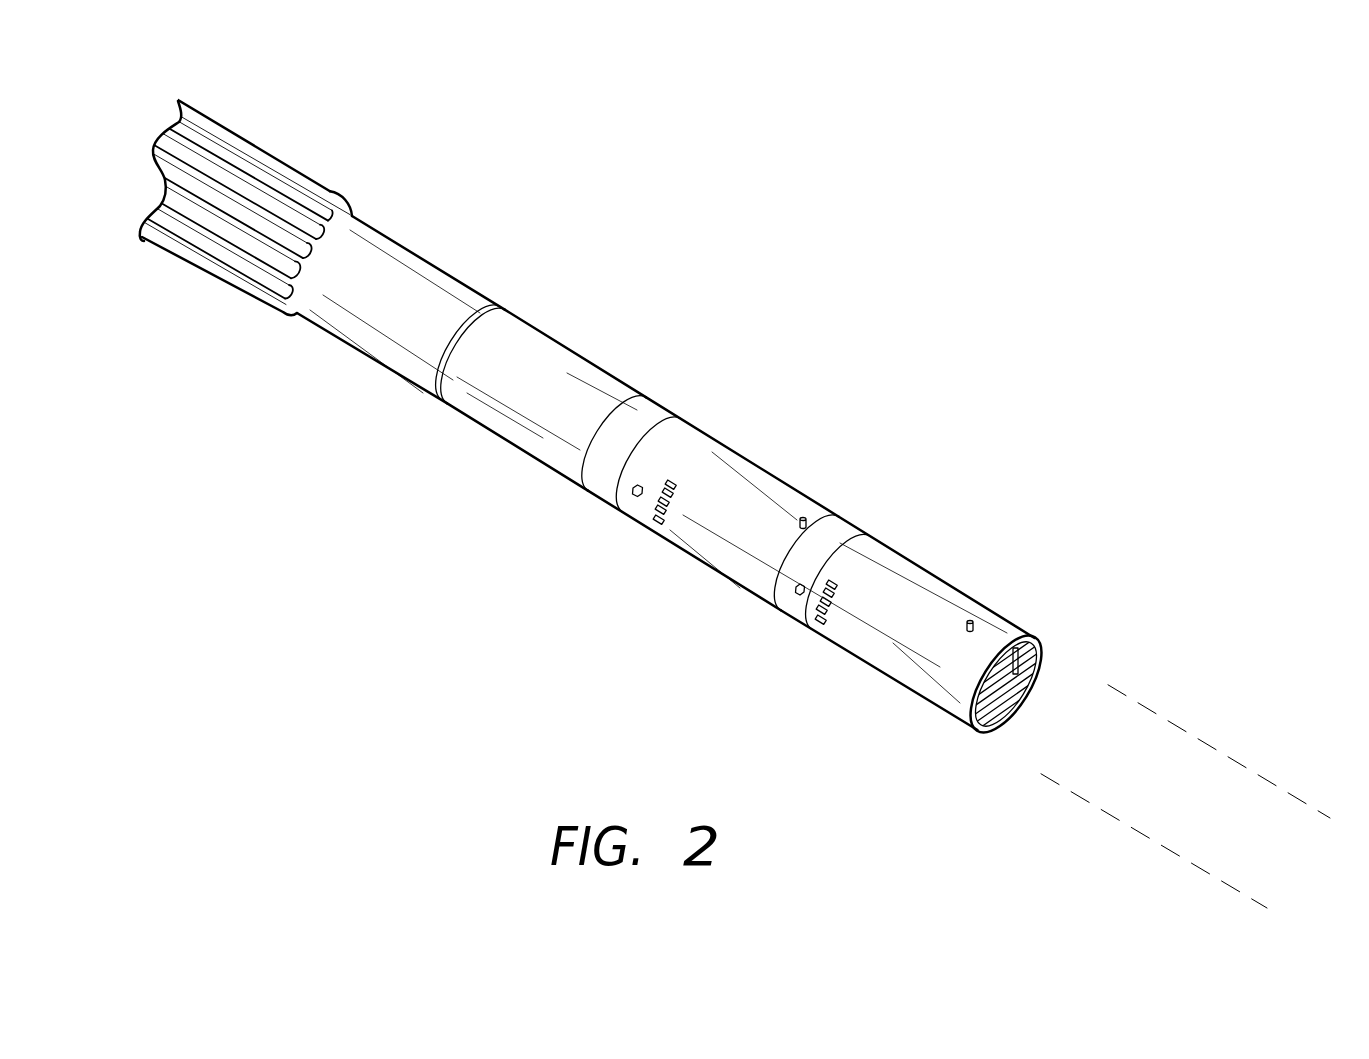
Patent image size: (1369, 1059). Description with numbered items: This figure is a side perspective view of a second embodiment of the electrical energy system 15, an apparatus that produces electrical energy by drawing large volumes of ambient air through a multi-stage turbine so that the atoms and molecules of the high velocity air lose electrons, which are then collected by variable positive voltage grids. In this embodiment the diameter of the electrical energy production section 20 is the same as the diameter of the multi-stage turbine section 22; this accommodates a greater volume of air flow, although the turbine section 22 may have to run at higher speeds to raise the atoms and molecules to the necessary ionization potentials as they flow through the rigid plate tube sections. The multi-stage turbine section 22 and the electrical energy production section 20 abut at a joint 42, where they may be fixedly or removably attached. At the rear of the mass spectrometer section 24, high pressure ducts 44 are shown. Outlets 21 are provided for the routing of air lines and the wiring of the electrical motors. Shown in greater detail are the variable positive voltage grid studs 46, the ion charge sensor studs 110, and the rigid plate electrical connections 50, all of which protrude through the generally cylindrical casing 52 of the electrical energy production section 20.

The electrical energy system 15 is at (962, 238).
The electrical energy production section 20 is at (1040, 412).
The outlets 21 is at (523, 333).
The multi-stage turbine section 22 is at (485, 489).
The mass spectrometer section 24 is at (420, 262).
The joint 42 is at (642, 400).
The high pressure ducts 44 is at (327, 190).
The variable positive voltage grid studs 46 is at (797, 590).
The rigid plate electrical connections 50 is at (700, 487).
The cylindrical casing 52 is at (923, 623).
The ion charge sensor studs 110 is at (810, 523).